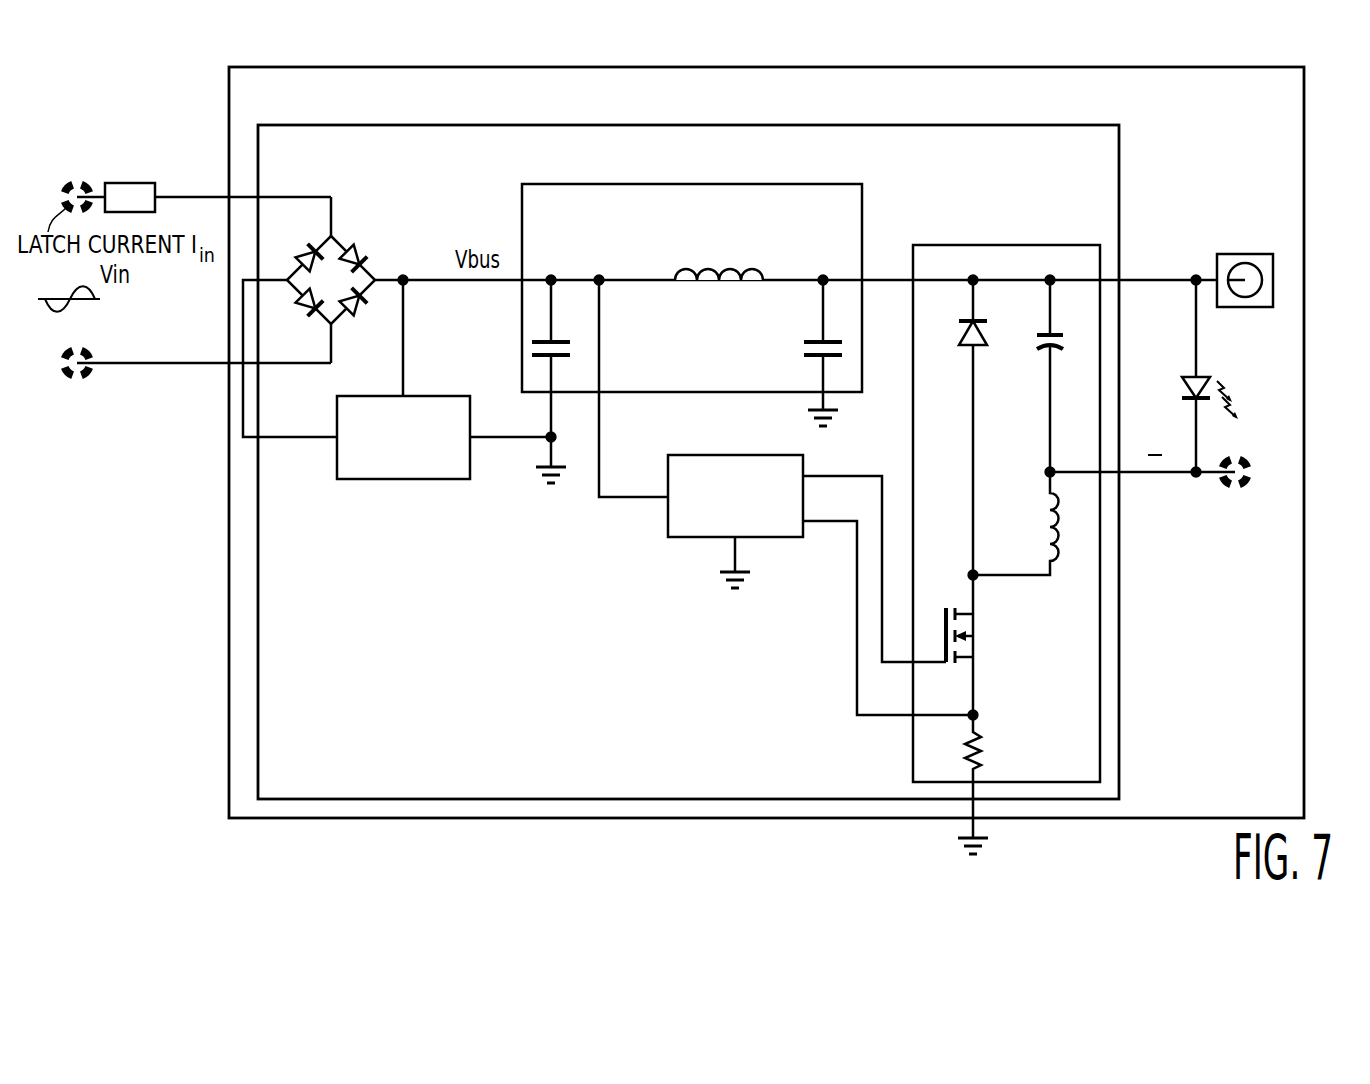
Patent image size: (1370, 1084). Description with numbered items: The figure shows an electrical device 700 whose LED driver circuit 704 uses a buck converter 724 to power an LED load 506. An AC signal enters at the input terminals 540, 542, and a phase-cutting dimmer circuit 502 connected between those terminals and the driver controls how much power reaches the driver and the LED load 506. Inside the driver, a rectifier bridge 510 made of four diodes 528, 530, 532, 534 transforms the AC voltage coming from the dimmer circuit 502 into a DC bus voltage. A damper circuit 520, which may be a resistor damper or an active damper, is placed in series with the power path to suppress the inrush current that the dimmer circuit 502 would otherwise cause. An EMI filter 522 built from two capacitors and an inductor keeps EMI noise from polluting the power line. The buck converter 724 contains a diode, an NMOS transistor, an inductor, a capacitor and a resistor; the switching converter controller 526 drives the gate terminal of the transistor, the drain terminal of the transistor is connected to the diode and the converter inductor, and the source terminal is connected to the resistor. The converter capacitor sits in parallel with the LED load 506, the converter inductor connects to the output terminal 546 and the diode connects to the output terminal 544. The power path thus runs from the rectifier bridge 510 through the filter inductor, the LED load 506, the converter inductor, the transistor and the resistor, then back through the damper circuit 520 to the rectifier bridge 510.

The electrical device 700 is at (229, 780).
The LED driver circuit 704 is at (258, 618).
The dimmer circuit 502 is at (128, 182).
The input terminal 540 is at (68, 183).
The input terminal 542 is at (70, 381).
The rectifier bridge 510 is at (370, 224).
The diode 528 is at (302, 256).
The diode 530 is at (300, 309).
The diode 532 is at (358, 316).
The diode 534 is at (357, 246).
The damper circuit 520 is at (437, 396).
The EMI filter 522 is at (862, 213).
The switching converter controller 526 is at (668, 517).
The buck converter 724 is at (1015, 245).
The output terminal 544 is at (1245, 254).
The LED load 506 is at (1205, 372).
The output terminal 546 is at (1230, 490).